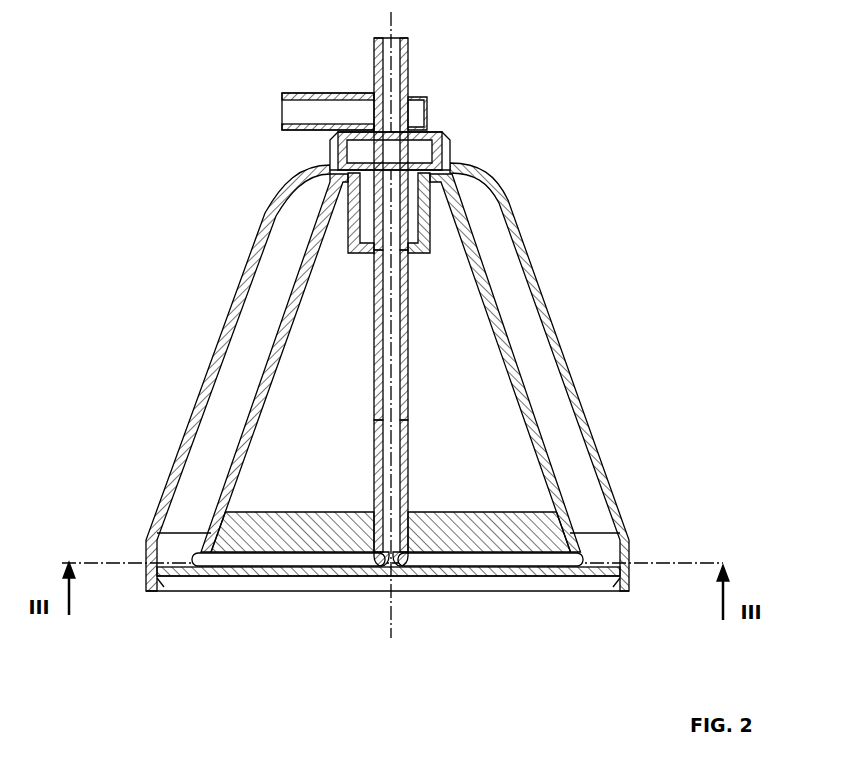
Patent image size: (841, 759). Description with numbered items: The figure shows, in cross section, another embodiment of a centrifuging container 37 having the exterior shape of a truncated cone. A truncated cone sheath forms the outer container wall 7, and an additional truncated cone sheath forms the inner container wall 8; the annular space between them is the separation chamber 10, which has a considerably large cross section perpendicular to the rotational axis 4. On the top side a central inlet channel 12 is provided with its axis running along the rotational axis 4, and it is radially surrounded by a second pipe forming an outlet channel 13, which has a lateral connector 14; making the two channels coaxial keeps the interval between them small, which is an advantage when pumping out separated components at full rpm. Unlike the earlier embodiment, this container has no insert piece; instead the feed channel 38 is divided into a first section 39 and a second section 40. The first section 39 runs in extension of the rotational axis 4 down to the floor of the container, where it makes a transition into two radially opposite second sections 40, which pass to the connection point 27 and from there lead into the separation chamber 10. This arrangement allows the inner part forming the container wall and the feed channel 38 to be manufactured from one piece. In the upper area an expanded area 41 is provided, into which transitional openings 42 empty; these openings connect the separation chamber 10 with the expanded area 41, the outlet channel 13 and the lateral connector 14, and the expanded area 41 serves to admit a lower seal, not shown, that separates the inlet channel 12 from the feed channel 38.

The rotational axis 4 is at (392, 617).
The outer container wall 7 is at (267, 215).
The inner container wall 8 is at (283, 322).
The separation chamber 10 is at (240, 362).
The inlet channel 12 is at (389, 73).
The outlet channel 13 is at (415, 110).
The lateral connector 14 is at (308, 112).
The connection point 27 is at (195, 557).
The centrifuging container 37 is at (590, 411).
The feed channel 38 is at (393, 346).
The first section 39 is at (402, 405).
The second section 40 is at (270, 555).
The expanded area 41 is at (415, 203).
The transitional openings 42 is at (452, 158).